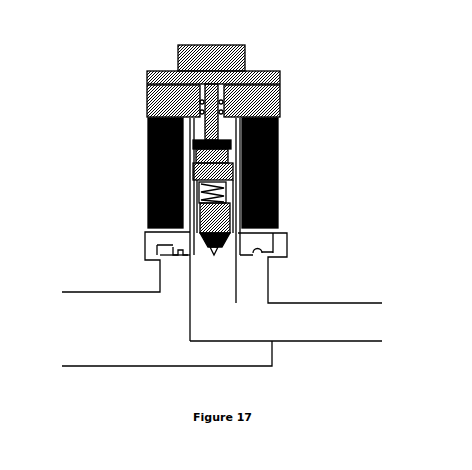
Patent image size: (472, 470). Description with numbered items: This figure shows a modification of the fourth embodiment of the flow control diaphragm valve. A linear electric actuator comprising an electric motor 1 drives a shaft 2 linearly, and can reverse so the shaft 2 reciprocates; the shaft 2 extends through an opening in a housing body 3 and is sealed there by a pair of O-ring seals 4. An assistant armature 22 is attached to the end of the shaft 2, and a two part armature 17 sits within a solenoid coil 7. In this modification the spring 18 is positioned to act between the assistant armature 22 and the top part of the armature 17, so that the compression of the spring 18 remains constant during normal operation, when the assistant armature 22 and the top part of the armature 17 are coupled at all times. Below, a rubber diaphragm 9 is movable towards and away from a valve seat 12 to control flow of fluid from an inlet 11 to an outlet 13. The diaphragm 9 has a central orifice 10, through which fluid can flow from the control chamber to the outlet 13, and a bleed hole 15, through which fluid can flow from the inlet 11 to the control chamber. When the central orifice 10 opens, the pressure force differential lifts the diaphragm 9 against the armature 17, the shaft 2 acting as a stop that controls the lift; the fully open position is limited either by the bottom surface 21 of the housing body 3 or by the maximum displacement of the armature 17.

The electric motor 1 is at (230, 49).
The shaft 2 is at (245, 77).
The housing body 3 is at (219, 92).
The O-ring seals 4 is at (224, 105).
The assistant armature 22 is at (150, 127).
The solenoid coil 7 is at (280, 182).
The spring 18 is at (282, 142).
The armature 17 is at (280, 153).
The bottom surface 21 is at (165, 242).
The bleed hole 15 is at (157, 243).
The central orifice 10 is at (212, 252).
The diaphragm 9 is at (240, 258).
The valve seat 12 is at (237, 263).
The outlet 13 is at (283, 325).
The inlet 11 is at (107, 327).